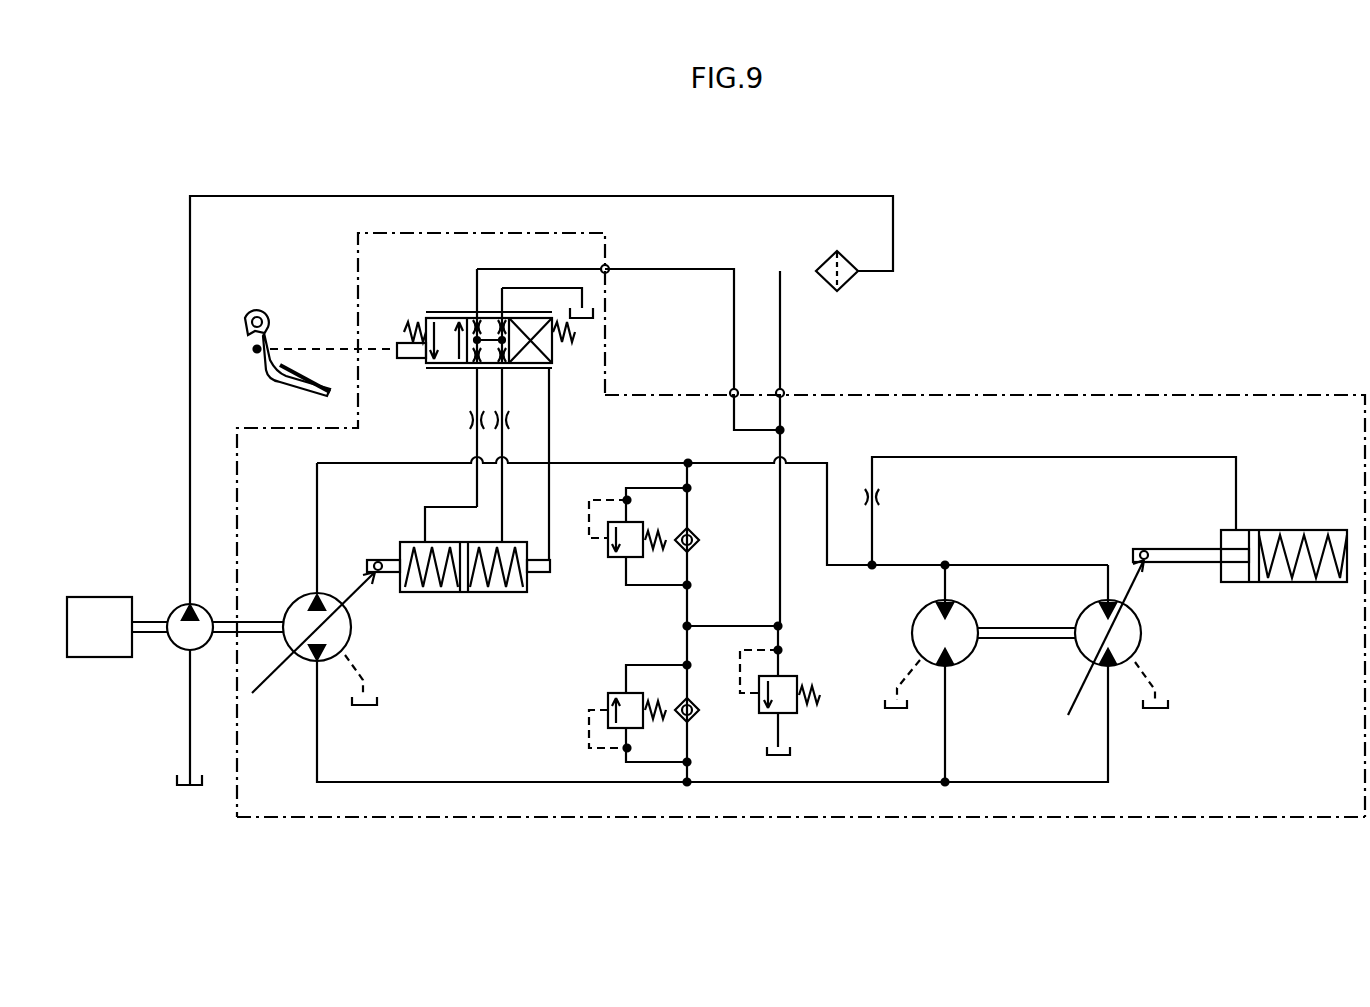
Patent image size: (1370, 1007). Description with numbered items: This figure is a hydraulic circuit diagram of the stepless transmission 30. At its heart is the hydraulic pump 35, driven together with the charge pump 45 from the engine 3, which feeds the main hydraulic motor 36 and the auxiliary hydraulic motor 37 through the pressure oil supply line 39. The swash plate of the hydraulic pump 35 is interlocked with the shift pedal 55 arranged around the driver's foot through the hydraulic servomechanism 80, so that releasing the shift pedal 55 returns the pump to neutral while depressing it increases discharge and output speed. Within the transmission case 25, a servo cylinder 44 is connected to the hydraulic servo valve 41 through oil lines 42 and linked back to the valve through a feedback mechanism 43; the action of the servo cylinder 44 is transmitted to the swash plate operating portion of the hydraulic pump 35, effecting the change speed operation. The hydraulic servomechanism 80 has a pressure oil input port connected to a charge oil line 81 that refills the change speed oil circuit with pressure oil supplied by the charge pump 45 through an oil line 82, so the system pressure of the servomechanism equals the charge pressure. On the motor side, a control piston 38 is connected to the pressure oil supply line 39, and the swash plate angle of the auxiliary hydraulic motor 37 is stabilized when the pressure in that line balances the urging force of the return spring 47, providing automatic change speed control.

The engine 3 is at (117, 627).
The transmission case 25 is at (937, 395).
The stepless transmission 30 is at (1095, 438).
The hydraulic pump 35 is at (293, 598).
The main hydraulic motor 36 is at (912, 628).
The auxiliary hydraulic motor 37 is at (1145, 633).
The control piston 38 is at (1172, 545).
The pressure oil supply line 39 is at (840, 483).
The hydraulic servo valve 41 is at (452, 312).
The oil lines 42 is at (502, 395).
The feedback mechanism 43 is at (552, 432).
The servo cylinder 44 is at (430, 593).
The charge pump 45 is at (175, 605).
The return spring 47 is at (1296, 545).
The shift pedal 55 is at (262, 390).
The hydraulic servomechanism 80 is at (375, 447).
The charge oil line 81 is at (778, 525).
The oil line 82 is at (697, 271).